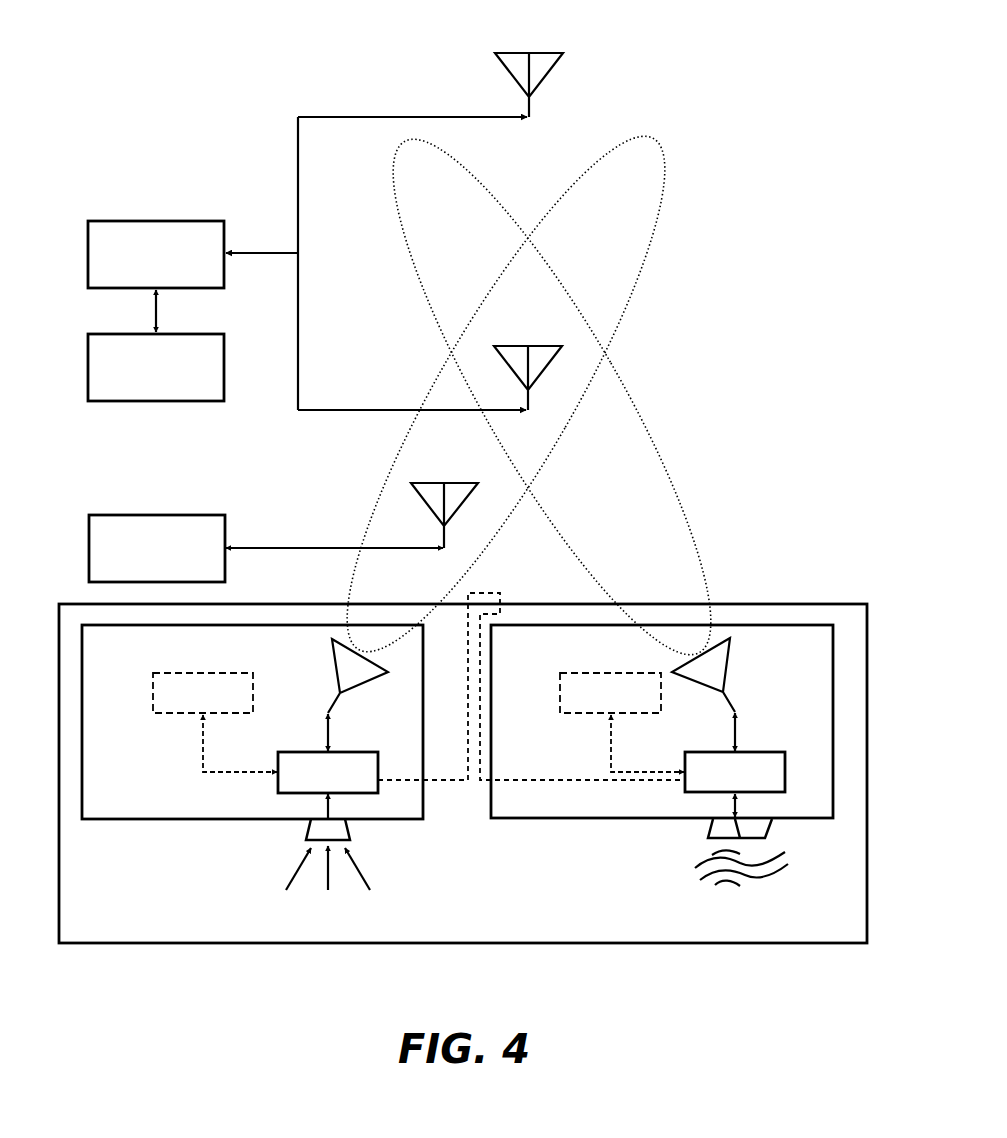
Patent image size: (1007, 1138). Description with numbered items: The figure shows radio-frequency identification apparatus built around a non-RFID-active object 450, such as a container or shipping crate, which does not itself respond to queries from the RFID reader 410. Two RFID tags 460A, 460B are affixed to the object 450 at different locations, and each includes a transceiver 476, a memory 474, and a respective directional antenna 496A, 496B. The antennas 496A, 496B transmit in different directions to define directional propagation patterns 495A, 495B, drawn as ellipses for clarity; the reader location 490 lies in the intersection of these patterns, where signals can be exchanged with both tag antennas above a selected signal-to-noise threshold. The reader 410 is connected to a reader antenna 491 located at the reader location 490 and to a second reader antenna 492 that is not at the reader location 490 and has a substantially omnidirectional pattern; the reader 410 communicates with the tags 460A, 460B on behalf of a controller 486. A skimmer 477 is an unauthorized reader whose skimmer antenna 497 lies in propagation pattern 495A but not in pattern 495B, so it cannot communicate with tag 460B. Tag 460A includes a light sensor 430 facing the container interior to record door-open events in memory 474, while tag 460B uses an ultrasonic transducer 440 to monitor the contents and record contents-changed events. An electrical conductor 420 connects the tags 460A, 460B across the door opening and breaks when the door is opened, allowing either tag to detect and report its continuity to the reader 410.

The RFID reader 410 is at (88, 226).
The controller 486 is at (88, 343).
The skimmer 477 is at (88, 523).
The reader antenna 492 is at (518, 52).
The reader antenna 491 is at (520, 345).
The skimmer antenna 497 is at (440, 482).
The directional propagation pattern 495A is at (660, 230).
The directional propagation pattern 495B is at (660, 448).
The reader location 490 is at (633, 356).
The memory 474 is at (153, 682).
The transceiver 476 is at (278, 760).
The directional antenna 496A is at (330, 662).
The directional antenna 496B is at (735, 660).
The RFID tag 460A is at (133, 820).
The RFID tag 460B is at (588, 820).
The light sensor 430 is at (306, 830).
The ultrasonic transducer 440 is at (710, 830).
The electrical conductor 420 is at (444, 782).
The object 450 is at (460, 945).